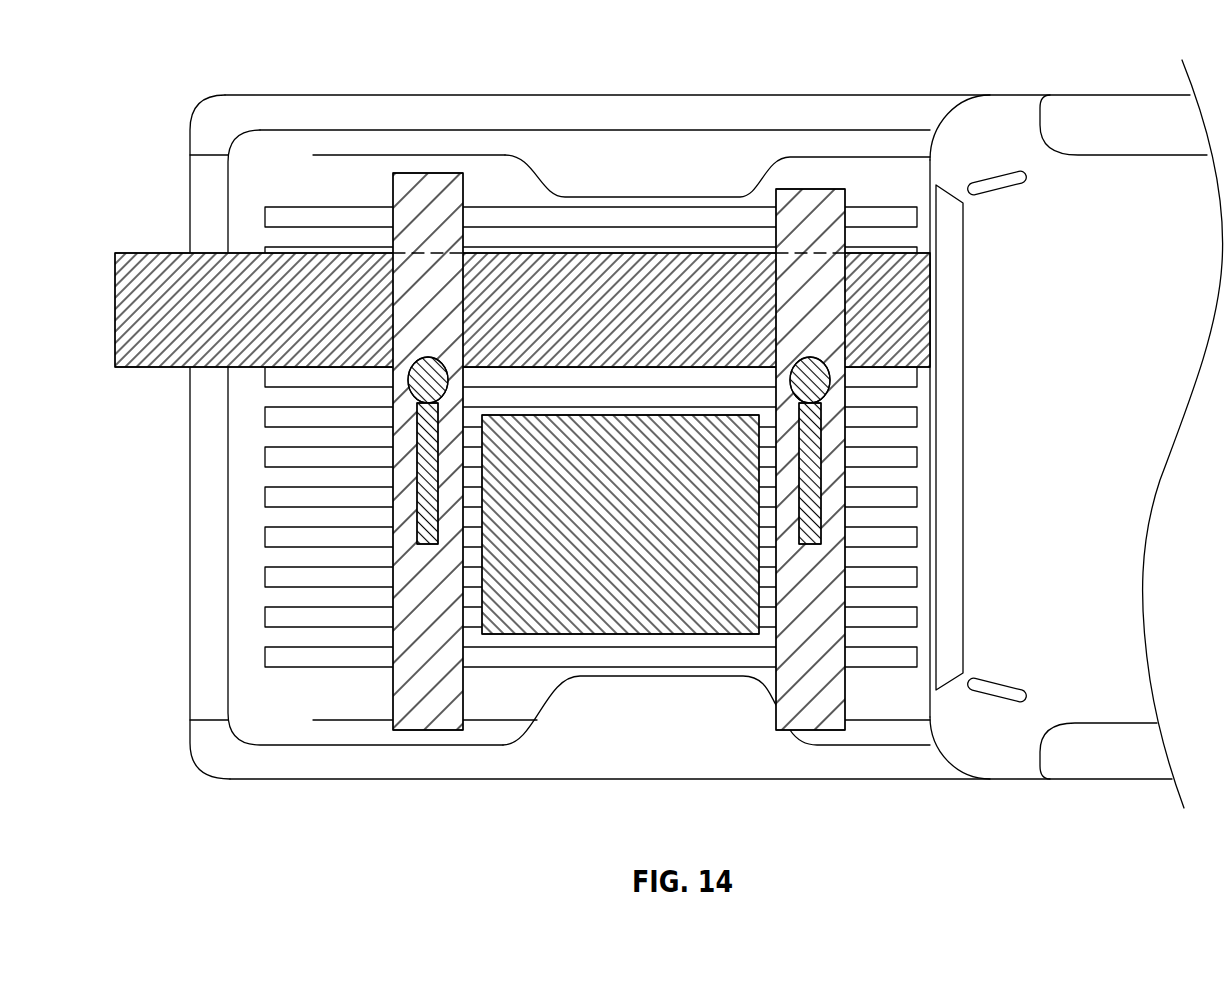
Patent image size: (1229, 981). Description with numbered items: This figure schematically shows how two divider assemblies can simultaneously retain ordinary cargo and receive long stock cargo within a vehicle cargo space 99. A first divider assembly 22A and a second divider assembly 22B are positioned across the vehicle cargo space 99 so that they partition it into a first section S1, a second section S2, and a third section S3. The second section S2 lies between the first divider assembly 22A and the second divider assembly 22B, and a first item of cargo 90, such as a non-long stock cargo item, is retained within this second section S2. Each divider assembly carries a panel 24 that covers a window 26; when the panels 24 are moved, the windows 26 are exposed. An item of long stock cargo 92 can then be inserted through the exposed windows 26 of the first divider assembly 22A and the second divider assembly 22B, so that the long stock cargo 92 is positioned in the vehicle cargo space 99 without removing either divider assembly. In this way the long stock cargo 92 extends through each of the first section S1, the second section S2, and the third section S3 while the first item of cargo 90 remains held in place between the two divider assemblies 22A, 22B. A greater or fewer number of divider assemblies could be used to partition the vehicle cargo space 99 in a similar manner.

The first divider assembly 22A is at (425, 175).
The second divider assembly 22B is at (810, 192).
The panel 24 is at (415, 435).
The window 26 is at (420, 293).
The first item of cargo 90 is at (578, 636).
The long stock cargo 92 is at (575, 273).
The vehicle cargo space 99 is at (665, 212).
The first section S1 is at (273, 718).
The second section S2 is at (655, 652).
The third section S3 is at (888, 688).